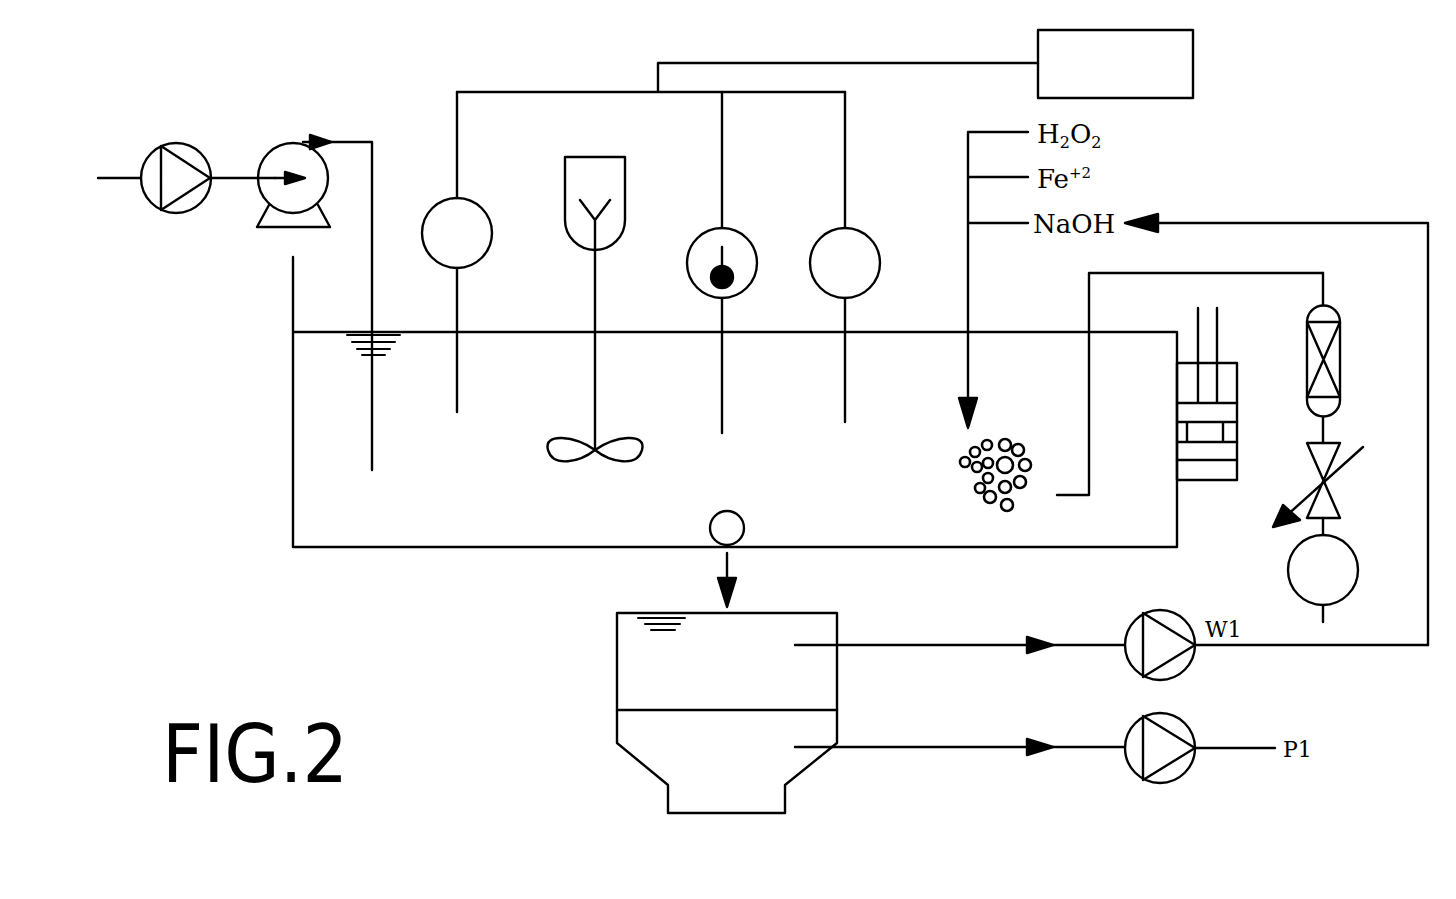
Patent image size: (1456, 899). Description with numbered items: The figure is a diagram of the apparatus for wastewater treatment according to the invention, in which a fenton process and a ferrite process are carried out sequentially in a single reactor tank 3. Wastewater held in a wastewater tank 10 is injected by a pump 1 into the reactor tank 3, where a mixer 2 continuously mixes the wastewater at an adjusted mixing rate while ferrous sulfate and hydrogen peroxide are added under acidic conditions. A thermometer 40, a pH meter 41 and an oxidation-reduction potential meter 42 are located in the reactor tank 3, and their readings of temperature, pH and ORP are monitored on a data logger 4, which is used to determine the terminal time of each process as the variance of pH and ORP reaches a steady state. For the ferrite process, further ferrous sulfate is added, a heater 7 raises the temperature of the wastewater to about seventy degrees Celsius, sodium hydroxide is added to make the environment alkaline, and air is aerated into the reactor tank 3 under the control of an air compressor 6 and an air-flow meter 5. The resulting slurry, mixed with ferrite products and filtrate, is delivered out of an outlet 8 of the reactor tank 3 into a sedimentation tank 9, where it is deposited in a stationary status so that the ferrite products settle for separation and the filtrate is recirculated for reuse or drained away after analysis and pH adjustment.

The pump 1 is at (275, 137).
The mixer 2 is at (590, 397).
The reactor tank 3 is at (262, 480).
The data logger 4 is at (1193, 63).
The air-flow meter 5 is at (1337, 307).
The air compressor 6 is at (1357, 555).
The heater 7 is at (1240, 387).
The outlet 8 is at (735, 510).
The sedimentation tank 9 is at (592, 668).
The wastewater tank 10 is at (170, 217).
The thermometer 40 is at (865, 228).
The pH meter 41 is at (744, 227).
The oxidation-reduction potential meter 42 is at (435, 205).